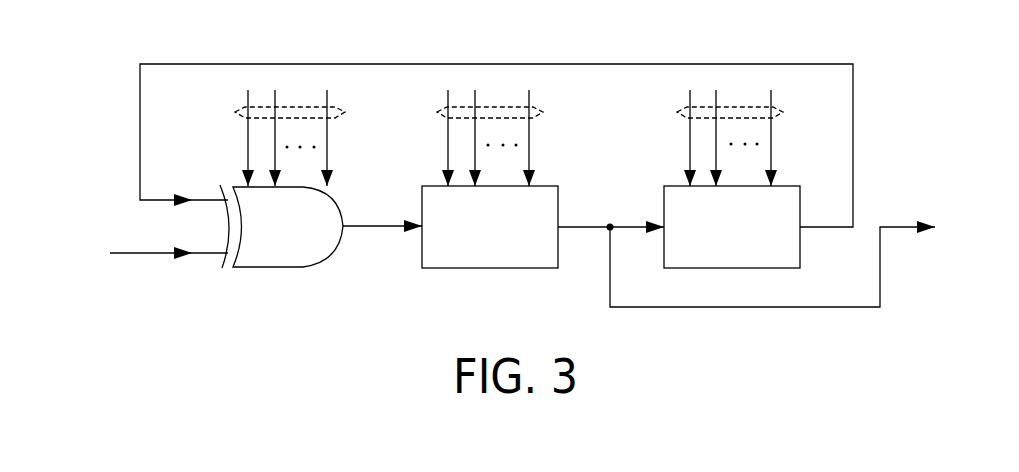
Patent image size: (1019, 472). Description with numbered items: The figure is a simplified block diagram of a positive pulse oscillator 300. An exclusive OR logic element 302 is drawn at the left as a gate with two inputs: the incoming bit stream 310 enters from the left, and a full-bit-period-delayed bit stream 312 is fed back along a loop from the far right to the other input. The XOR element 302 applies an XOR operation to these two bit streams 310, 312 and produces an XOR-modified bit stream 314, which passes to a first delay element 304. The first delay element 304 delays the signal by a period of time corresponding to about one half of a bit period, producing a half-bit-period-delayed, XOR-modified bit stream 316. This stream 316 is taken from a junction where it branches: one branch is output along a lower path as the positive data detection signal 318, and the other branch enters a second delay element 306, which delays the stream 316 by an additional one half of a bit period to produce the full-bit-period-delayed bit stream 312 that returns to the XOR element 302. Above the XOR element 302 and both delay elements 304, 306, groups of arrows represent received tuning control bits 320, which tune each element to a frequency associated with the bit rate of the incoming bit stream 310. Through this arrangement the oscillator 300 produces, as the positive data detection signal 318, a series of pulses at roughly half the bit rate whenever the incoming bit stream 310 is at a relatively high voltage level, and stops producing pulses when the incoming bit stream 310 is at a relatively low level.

The positive pulse oscillator 300 is at (937, 90).
The exclusive OR (XOR) logic element 302 is at (287, 268).
The first delay element 304 is at (558, 195).
The second delay element 306 is at (800, 197).
The incoming bit stream 310 is at (143, 253).
The full-bit-period-delayed bit stream 312 is at (140, 118).
The XOR-modified bit stream 314 is at (378, 226).
The half-bit-period-delayed, XOR-modified bit stream 316 is at (620, 227).
The positive data detection signal 318 is at (812, 307).
The tuning control bits 320 is at (345, 112).